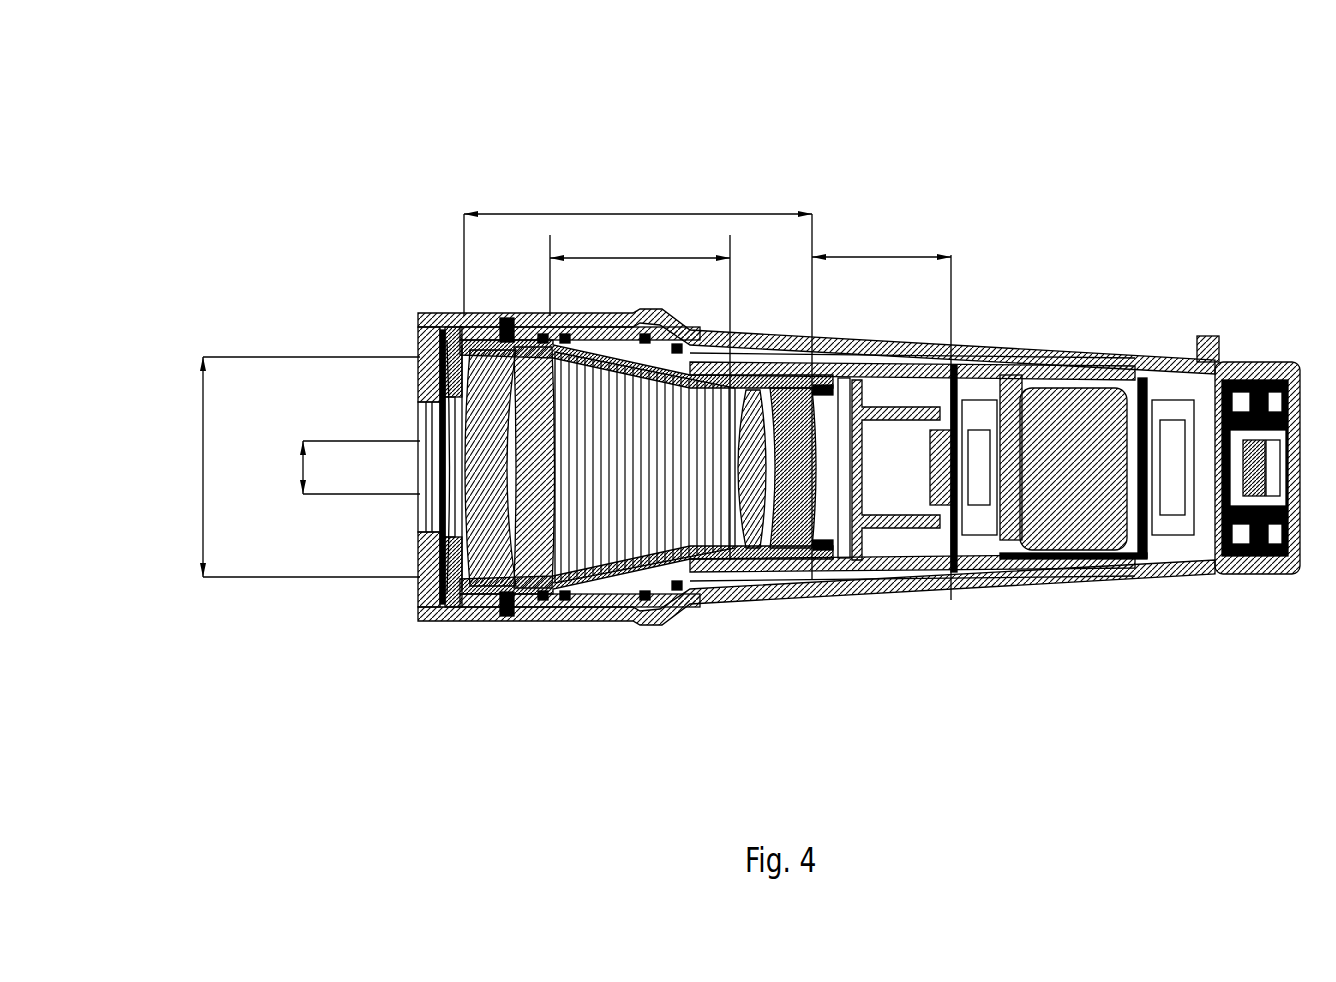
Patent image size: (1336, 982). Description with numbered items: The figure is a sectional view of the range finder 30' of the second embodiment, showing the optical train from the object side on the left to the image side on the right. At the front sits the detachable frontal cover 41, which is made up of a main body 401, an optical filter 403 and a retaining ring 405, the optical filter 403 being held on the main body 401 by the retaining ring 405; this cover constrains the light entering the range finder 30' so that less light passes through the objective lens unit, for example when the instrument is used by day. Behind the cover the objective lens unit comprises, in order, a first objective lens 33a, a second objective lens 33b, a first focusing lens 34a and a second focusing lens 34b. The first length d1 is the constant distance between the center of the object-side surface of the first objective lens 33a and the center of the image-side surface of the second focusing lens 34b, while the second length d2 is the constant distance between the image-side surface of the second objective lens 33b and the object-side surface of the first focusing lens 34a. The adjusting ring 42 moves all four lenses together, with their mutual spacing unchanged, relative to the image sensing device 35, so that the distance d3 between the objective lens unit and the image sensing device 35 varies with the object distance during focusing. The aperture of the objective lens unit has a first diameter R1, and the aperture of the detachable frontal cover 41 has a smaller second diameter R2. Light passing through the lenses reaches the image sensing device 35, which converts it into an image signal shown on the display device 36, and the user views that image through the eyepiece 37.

The range finder 30' is at (742, 335).
The detachable frontal cover 41 is at (415, 747).
The main body 401 is at (455, 620).
The optical filter 403 is at (447, 313).
The retaining ring 405 is at (478, 620).
The first objective lens 33a is at (512, 622).
The second objective lens 33b is at (558, 620).
The adjusting ring 42 is at (598, 620).
The first focusing lens 34a is at (752, 548).
The second focusing lens 34b is at (806, 560).
The image sensing device 35 is at (955, 565).
The display device 36 is at (1152, 570).
The eyepiece 37 is at (1258, 575).
The first diameter R1 is at (293, 467).
The second diameter R2 is at (338, 467).
The first length d1 is at (638, 380).
The second length d2 is at (640, 397).
The distance d3 is at (881, 411).